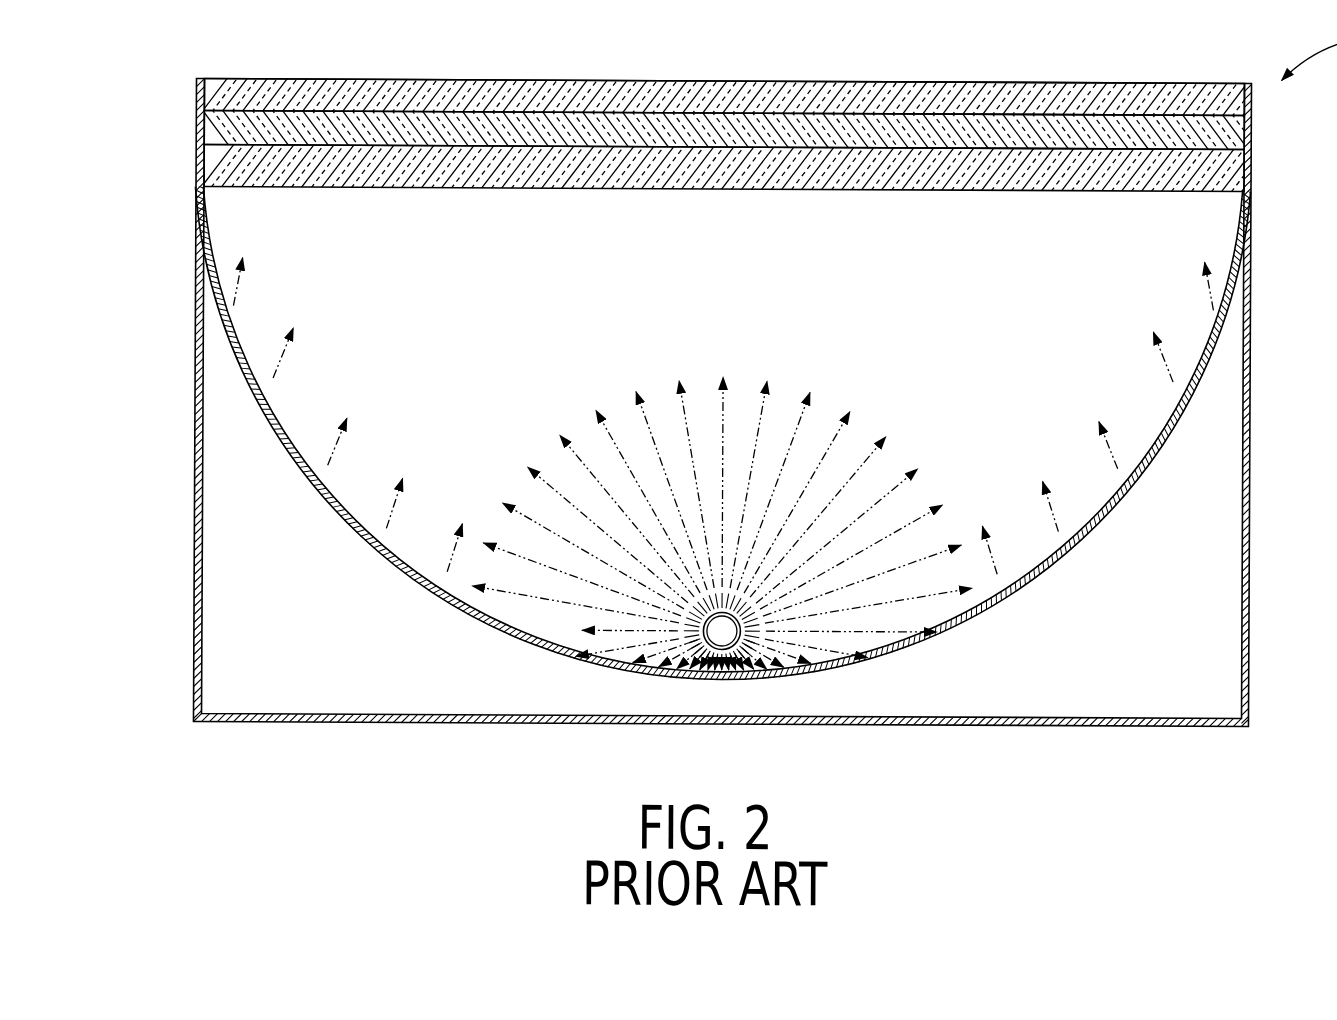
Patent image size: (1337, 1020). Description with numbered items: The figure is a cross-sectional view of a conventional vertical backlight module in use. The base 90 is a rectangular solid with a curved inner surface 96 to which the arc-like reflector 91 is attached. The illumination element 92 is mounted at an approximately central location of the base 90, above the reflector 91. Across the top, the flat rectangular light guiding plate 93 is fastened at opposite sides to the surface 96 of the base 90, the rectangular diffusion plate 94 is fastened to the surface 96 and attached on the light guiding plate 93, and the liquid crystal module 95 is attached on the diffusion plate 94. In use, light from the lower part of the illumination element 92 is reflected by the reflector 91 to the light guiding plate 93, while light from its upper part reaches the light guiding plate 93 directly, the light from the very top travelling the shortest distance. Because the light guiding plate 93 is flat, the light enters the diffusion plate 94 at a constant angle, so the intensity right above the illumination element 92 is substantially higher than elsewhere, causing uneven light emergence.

The base 90 is at (1227, 648).
The reflector 91 is at (283, 432).
The illumination element 92 is at (727, 628).
The light guiding plate 93 is at (227, 168).
The diffusion plate 94 is at (223, 137).
The liquid crystal module 95 is at (215, 95).
The curved inner surface 96 is at (353, 533).